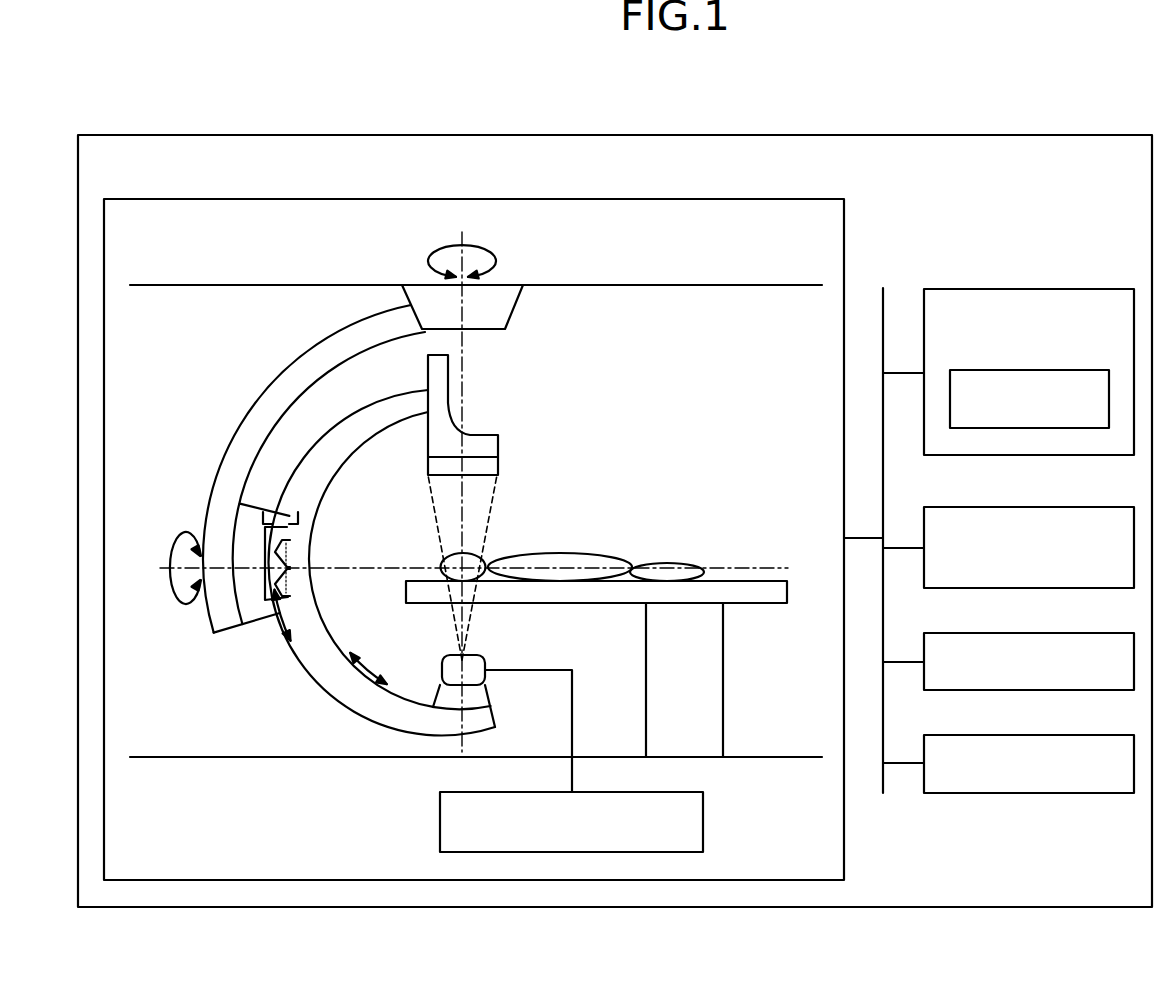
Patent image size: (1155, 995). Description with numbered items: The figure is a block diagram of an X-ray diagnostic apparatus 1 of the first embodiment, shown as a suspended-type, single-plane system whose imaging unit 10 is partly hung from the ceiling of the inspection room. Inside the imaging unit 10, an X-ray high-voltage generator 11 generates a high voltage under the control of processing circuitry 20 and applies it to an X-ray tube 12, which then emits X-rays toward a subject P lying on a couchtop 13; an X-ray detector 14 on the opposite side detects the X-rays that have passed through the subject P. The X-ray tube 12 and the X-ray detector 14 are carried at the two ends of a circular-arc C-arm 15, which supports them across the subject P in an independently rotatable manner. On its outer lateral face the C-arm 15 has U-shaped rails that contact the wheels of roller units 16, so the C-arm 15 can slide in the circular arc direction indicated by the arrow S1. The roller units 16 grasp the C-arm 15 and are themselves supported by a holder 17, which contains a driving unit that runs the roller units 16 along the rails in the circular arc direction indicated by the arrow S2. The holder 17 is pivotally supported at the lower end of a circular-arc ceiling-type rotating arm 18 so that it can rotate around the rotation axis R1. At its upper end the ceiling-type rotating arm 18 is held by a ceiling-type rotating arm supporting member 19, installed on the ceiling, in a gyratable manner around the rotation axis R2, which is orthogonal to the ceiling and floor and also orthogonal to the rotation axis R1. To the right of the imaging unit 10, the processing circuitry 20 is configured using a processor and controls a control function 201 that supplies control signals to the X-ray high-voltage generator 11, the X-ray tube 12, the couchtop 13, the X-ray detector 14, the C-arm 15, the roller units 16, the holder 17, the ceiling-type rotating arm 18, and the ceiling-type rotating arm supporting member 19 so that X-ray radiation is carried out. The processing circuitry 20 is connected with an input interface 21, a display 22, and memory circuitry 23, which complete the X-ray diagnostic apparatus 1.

The X-ray diagnostic apparatus 1 is at (1095, 135).
The imaging unit 10 is at (778, 199).
The X-ray high-voltage generator 11 is at (613, 792).
The X-ray tube 12 is at (487, 667).
The couchtop 13 is at (610, 604).
The X-ray detector 14 is at (428, 468).
The C-arm 15 is at (310, 540).
The roller units 16 is at (285, 510).
The holder 17 is at (257, 506).
The ceiling-type rotating arm 18 is at (290, 366).
The ceiling-type rotating arm supporting member 19 is at (518, 308).
The processing circuitry 20 is at (1068, 289).
The control function 201 is at (1068, 370).
The input interface 21 is at (1068, 507).
The display 22 is at (1068, 633).
The memory circuitry 23 is at (1068, 735).
The subject P is at (582, 553).
The rotation axis R1 is at (183, 533).
The rotation axis R2 is at (497, 258).
The arrow S1 is at (372, 665).
The arrow S2 is at (281, 622).